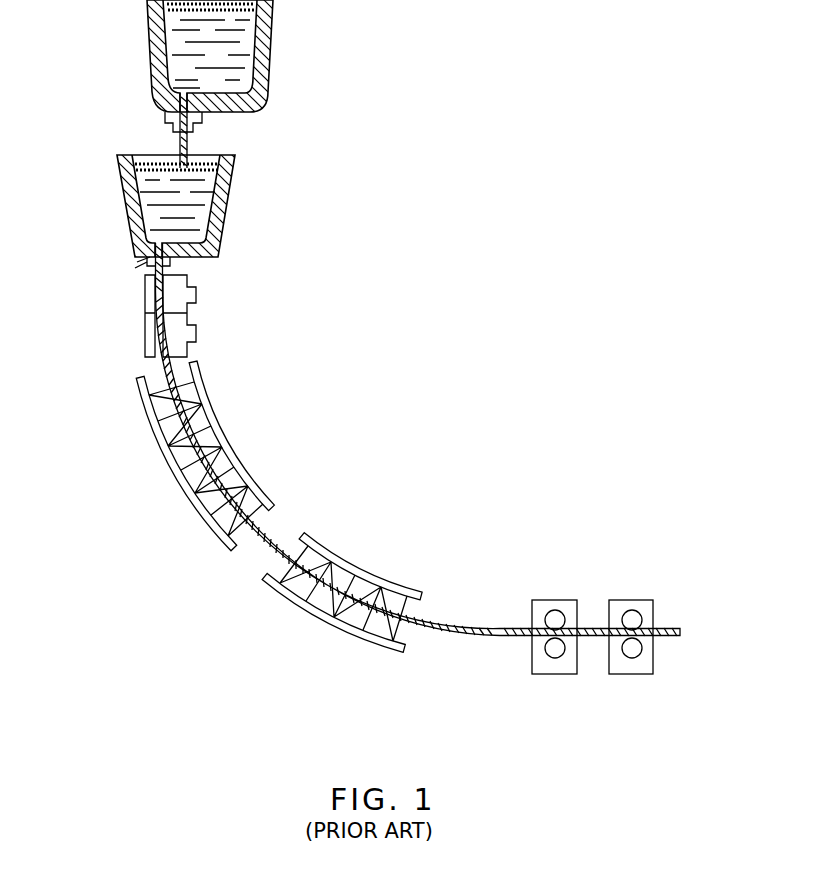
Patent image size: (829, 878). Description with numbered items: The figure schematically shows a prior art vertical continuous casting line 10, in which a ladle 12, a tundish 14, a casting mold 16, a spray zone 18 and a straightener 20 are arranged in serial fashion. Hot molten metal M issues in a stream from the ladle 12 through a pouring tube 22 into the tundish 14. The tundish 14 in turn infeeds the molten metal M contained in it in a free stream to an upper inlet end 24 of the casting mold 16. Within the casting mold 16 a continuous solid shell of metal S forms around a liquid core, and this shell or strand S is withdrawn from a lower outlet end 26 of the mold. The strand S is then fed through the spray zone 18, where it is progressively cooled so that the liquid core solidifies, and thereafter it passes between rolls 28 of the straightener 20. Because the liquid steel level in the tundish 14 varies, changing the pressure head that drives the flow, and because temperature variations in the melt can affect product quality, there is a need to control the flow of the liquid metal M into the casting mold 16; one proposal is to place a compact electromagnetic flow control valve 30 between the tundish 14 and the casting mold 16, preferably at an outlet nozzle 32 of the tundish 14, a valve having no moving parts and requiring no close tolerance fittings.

The vertical continuous casting line 10 is at (380, 257).
The ladle 12 is at (273, 68).
The tundish 14 is at (228, 200).
The casting mold 16 is at (198, 338).
The spray zone 18 is at (318, 540).
The straightener 20 is at (622, 598).
The pouring tube 22 is at (188, 150).
The upper inlet end 24 is at (172, 266).
The lower outlet end 26 is at (186, 372).
The rolls 28 is at (547, 652).
The electromagnetic flow control valve 30 is at (140, 261).
The outlet nozzle 32 is at (136, 268).
The molten metal M is at (183, 63).
The strand S is at (267, 542).